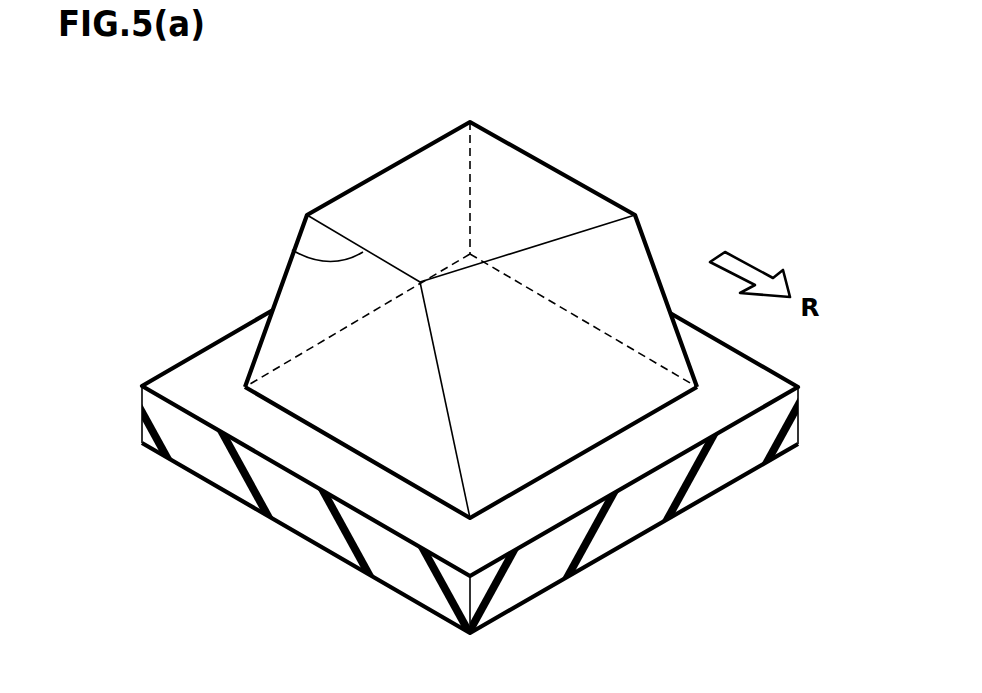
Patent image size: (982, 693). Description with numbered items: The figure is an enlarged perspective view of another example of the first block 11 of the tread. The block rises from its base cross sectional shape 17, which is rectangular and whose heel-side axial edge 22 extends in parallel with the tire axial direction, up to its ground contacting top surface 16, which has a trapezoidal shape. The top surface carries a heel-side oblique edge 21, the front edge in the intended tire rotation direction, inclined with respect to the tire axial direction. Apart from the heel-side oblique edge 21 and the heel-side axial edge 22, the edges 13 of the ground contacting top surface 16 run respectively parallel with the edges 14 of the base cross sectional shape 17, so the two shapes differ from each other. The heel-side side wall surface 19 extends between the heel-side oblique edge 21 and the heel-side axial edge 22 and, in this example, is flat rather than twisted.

The first block 11 is at (453, 348).
The edges of the ground contacting top surface 13 is at (292, 250).
The edges of the base cross sectional shape 14 is at (353, 455).
The ground contacting top surface 16 is at (495, 172).
The base cross sectional shape 17 is at (375, 388).
The heel-side side wall surface 19 is at (585, 375).
The heel-side oblique edge 21 is at (560, 237).
The heel-side axial edge 22 is at (592, 452).